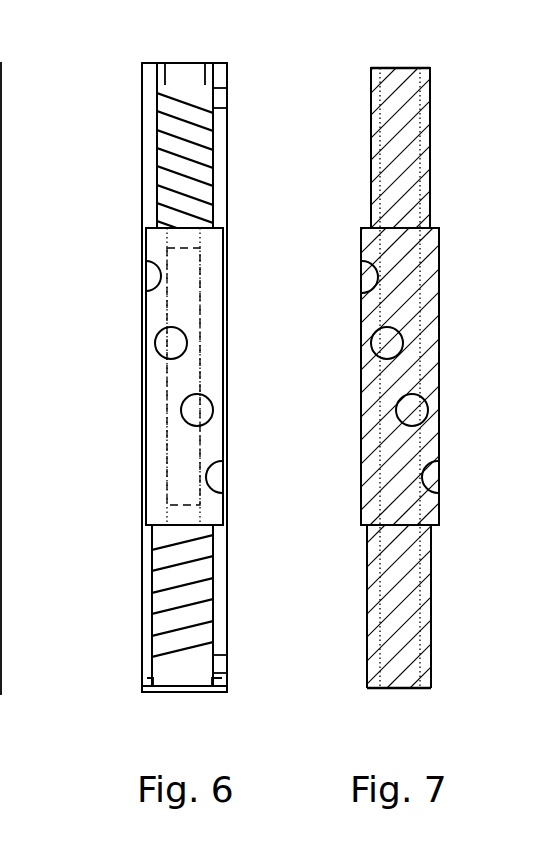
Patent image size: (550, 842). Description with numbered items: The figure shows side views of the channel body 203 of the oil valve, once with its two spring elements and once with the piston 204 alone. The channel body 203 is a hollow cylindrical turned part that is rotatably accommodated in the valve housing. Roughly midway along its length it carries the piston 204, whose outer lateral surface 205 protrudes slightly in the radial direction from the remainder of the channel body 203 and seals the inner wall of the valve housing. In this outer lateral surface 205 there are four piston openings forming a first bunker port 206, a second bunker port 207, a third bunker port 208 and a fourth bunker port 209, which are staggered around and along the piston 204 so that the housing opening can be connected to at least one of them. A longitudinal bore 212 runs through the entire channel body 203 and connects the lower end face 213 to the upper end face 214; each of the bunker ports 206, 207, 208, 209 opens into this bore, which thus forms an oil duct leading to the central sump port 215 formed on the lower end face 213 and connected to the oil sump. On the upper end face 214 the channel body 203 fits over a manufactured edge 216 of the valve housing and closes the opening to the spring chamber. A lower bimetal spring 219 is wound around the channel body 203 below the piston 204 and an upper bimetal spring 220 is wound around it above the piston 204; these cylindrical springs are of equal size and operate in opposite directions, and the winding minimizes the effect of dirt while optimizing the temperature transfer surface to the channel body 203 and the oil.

In FIG. 7, the channel body 203 is at (355, 62).
In FIG. 6, the piston 204 is at (222, 370).
In FIG. 7, the piston 204 is at (317, 348).
In FIG. 6, the outer lateral surface 205 is at (208, 243).
In FIG. 7, the outer lateral surface 205 is at (368, 242).
In FIG. 6, the first bunker port 206 is at (145, 283).
In FIG. 7, the first bunker port 206 is at (362, 285).
In FIG. 6, the second bunker port 207 is at (165, 345).
In FIG. 7, the second bunker port 207 is at (392, 345).
In FIG. 6, the third bunker port 208 is at (195, 410).
In FIG. 7, the third bunker port 208 is at (412, 410).
In FIG. 6, the fourth bunker port 209 is at (212, 478).
In FIG. 7, the fourth bunker port 209 is at (428, 474).
In FIG. 7, the longitudinal bore 212 is at (423, 172).
In FIG. 7, the lower end face 213 is at (425, 688).
In FIG. 7, the upper end face 214 is at (400, 68).
In FIG. 7, the sump port 215 is at (402, 688).
In FIG. 6, the manufactured edge 216 is at (165, 72).
In FIG. 6, the lower bimetal spring 219 is at (185, 556).
In FIG. 6, the upper bimetal spring 220 is at (193, 170).